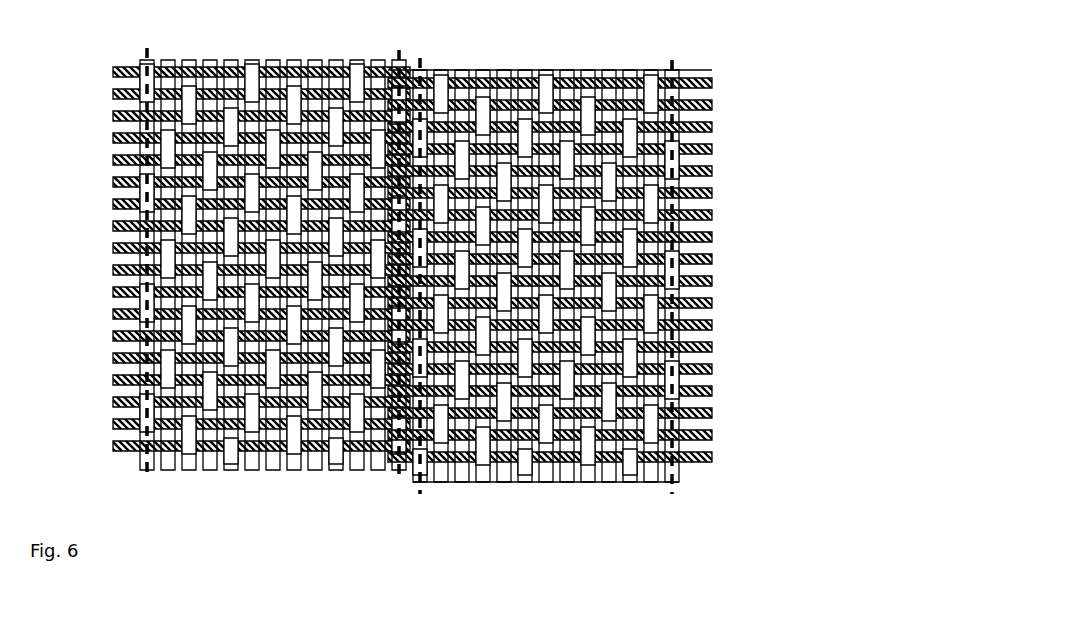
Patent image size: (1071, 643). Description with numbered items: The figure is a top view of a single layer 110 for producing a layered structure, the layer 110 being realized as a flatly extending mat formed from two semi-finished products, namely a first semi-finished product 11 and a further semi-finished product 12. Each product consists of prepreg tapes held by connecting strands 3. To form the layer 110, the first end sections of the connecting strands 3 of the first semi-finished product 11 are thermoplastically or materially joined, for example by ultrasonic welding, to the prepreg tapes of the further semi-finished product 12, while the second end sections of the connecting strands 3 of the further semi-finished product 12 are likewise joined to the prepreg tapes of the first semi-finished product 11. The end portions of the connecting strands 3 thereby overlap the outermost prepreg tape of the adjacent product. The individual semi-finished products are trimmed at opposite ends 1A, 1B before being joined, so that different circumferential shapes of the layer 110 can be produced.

The connecting strand 3 is at (712, 108).
The first semi-finished product 11 is at (579, 285).
The further semi-finished product 12 is at (247, 269).
The end of semi-finished product 1A is at (523, 58).
The end of semi-finished product 1B is at (549, 503).
The layer 110 is at (466, 282).